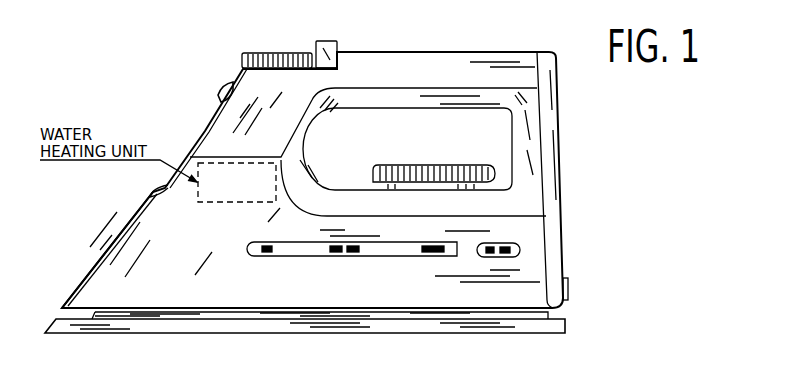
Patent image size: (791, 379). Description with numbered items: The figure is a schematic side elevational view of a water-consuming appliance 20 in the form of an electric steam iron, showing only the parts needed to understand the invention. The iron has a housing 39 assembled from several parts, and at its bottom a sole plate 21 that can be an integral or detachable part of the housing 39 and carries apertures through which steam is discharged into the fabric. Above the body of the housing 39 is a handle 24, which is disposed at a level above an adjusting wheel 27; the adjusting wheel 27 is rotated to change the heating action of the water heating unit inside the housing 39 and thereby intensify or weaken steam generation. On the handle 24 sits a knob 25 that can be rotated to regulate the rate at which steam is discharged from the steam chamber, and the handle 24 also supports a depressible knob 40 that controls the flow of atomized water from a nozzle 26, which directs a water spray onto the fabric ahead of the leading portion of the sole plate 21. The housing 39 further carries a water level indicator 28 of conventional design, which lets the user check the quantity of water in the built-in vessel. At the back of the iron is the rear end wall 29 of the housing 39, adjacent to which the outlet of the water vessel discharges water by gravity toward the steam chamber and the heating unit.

The water-consuming appliance 20 is at (153, 130).
The sole plate 21 is at (300, 335).
The handle 24 is at (422, 67).
The knob 25 is at (268, 62).
The nozzle 26 is at (217, 95).
The adjusting wheel 27 is at (432, 177).
The water level indicator 28 is at (408, 253).
The rear end wall 29 is at (568, 208).
The housing 39 is at (112, 243).
The depressible knob 40 is at (334, 47).